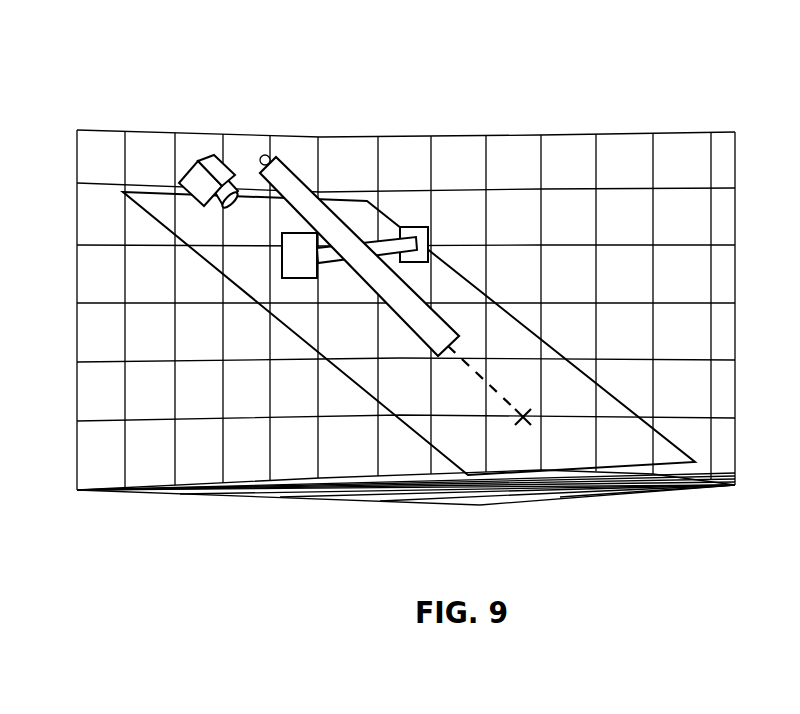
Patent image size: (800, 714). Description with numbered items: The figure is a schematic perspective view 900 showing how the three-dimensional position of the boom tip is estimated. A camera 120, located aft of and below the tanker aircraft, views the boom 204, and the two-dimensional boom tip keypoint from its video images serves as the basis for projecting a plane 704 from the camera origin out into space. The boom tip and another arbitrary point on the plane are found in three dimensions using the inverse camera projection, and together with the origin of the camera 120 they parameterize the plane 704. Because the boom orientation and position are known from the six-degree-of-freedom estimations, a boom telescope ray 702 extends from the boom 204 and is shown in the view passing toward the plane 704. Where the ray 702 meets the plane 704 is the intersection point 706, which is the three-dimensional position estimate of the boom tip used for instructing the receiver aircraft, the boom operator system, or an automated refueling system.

The perspective view 900 is at (470, 106).
The camera 120 is at (215, 155).
The boom 204 is at (283, 168).
The boom telescope ray 702 is at (493, 388).
The plane 704 is at (413, 433).
The intersection point 706 is at (521, 420).